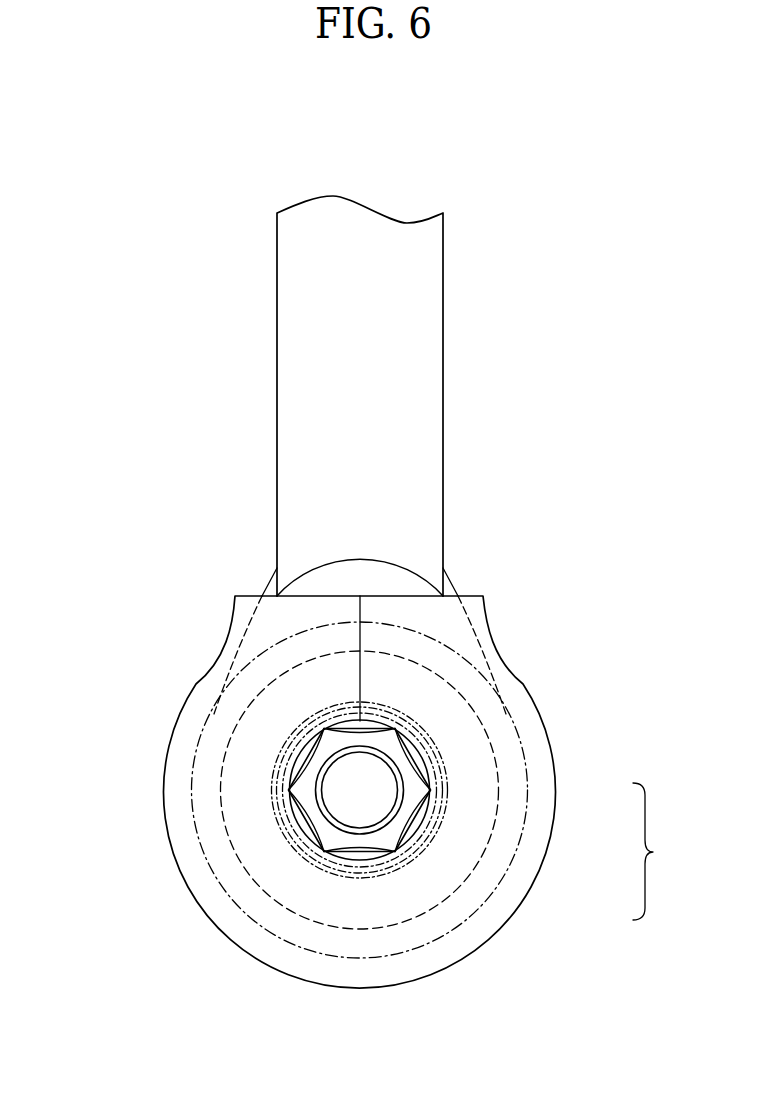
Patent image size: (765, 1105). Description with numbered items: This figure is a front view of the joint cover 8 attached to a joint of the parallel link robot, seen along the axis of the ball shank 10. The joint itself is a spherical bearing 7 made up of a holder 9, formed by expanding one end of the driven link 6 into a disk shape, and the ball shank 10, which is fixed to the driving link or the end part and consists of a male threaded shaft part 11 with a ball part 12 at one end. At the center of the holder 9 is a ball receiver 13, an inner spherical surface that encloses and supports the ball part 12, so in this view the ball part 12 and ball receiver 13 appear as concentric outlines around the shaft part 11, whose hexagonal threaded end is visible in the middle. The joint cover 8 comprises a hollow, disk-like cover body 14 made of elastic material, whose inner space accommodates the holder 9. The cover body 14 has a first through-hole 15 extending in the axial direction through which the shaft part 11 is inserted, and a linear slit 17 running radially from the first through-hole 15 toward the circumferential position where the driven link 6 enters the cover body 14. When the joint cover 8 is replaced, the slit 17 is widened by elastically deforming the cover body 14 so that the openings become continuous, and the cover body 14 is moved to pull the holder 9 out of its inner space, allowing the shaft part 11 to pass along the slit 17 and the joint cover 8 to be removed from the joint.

The driven link 6 is at (277, 364).
The spherical bearing 7 is at (290, 942).
The joint cover 8 is at (220, 930).
The holder 9 is at (418, 947).
The ball shank 10 is at (663, 851).
The shaft part 11 is at (400, 816).
The ball part 12 is at (423, 848).
The ball receiver 13 is at (440, 757).
The cover body 14 is at (165, 795).
The first through-hole 15 is at (312, 822).
The slit 17 is at (360, 641).